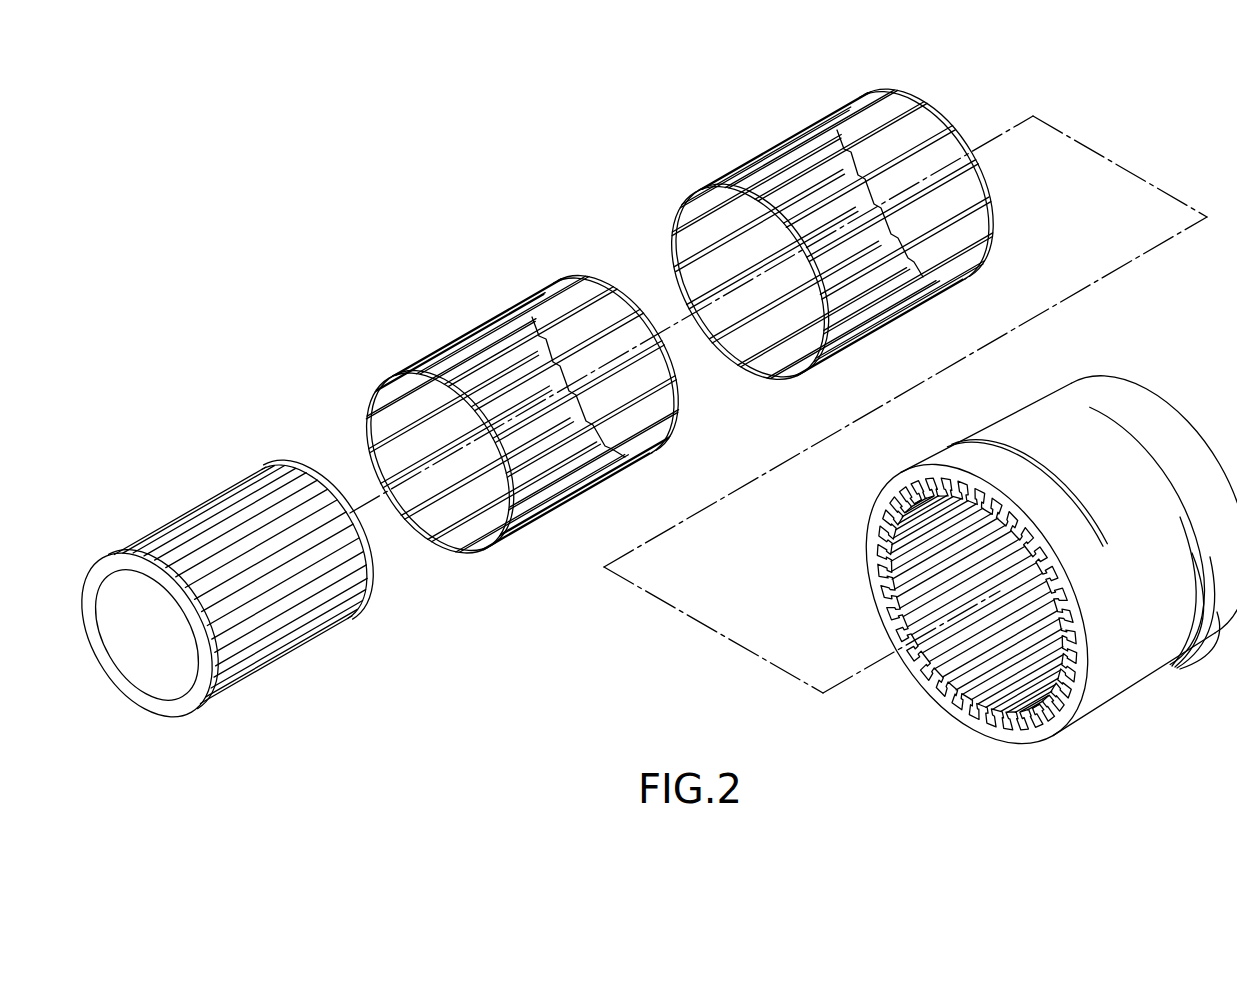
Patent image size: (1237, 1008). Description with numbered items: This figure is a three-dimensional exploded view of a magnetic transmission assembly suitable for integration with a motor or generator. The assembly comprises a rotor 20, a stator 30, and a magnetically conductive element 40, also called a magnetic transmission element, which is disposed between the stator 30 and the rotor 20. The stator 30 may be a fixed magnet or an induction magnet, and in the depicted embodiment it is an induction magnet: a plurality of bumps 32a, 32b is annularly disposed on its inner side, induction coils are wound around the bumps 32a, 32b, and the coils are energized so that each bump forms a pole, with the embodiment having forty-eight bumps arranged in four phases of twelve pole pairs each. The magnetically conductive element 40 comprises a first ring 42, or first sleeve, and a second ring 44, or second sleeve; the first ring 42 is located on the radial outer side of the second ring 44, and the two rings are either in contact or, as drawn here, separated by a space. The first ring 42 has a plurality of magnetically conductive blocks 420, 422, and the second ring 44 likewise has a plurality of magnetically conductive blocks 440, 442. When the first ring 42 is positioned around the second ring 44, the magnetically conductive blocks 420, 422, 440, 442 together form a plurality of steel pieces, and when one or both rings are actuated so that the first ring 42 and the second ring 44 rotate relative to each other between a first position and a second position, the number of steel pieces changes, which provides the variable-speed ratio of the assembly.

The rotor 20 is at (105, 573).
The stator 30 is at (1018, 556).
The bump 32a is at (885, 510).
The bump 32b is at (877, 557).
The magnetically conductive element 40 is at (620, 168).
The first ring 42 is at (811, 229).
The magnetically conductive block 420 is at (900, 110).
The magnetically conductive block 422 is at (923, 126).
The second ring 44 is at (522, 387).
The magnetically conductive block 440 is at (560, 297).
The magnetically conductive block 442 is at (608, 317).